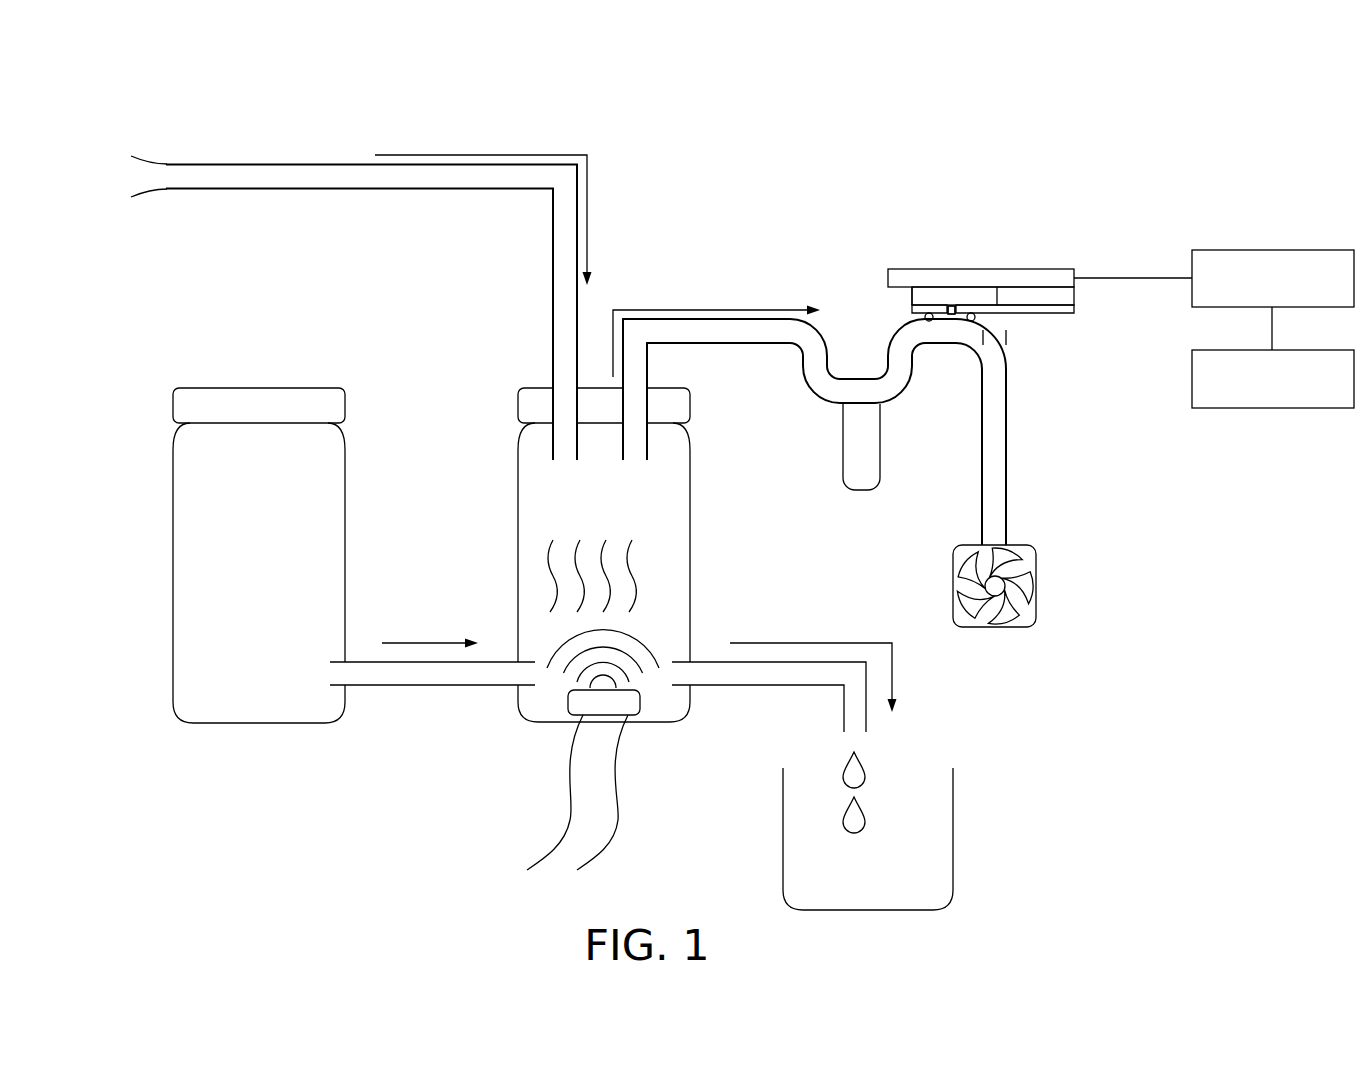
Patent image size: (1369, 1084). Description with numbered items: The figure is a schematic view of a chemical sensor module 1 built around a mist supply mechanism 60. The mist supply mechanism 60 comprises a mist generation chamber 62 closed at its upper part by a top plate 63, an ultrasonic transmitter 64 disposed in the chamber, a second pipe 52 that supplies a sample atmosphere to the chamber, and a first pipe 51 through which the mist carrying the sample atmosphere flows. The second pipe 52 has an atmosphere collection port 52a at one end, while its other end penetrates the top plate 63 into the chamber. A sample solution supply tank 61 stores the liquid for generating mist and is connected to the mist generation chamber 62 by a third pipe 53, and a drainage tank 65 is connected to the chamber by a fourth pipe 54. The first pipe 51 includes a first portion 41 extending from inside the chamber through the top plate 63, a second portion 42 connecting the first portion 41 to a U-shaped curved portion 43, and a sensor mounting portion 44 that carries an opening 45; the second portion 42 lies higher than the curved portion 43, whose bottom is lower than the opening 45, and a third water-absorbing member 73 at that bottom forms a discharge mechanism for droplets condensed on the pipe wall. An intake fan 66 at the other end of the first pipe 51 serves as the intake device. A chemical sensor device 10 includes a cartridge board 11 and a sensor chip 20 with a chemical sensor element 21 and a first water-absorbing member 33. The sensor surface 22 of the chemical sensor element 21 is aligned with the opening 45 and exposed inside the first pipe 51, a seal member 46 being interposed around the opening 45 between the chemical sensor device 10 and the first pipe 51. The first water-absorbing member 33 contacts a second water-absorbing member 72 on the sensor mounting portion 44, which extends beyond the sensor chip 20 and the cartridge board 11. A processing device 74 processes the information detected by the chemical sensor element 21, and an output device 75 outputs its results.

The chemical sensor module 1 is at (790, 120).
The chemical sensor device 10 is at (934, 301).
The cartridge board 11 is at (933, 280).
The sensor chip 20 is at (981, 297).
The chemical sensor element 21 is at (953, 294).
The sensor surface 22 is at (951, 318).
The first water-absorbing member 33 is at (912, 304).
The seal member 46 is at (913, 323).
The second water-absorbing member 72 is at (1043, 313).
The first portion 41 is at (650, 372).
The second portion 42 is at (685, 318).
The curved portion 43 is at (826, 404).
The sensor mounting portion 44 is at (990, 323).
The opening 45 is at (953, 318).
The first pipe 51 is at (797, 371).
The second pipe 52 is at (340, 160).
The atmosphere collection port 52a is at (137, 180).
The third pipe 53 is at (419, 694).
The fourth pipe 54 is at (749, 694).
The mist supply mechanism 60 is at (745, 284).
The sample solution supply tank 61 is at (255, 724).
The mist generation chamber 62 is at (583, 508).
The top plate 63 is at (518, 403).
The ultrasonic transmitter 64 is at (560, 712).
The drainage tank 65 is at (953, 827).
The intake fan 66 is at (1036, 583).
The third water-absorbing member 73 is at (858, 492).
The processing device 74 is at (1310, 250).
The output device 75 is at (1298, 408).